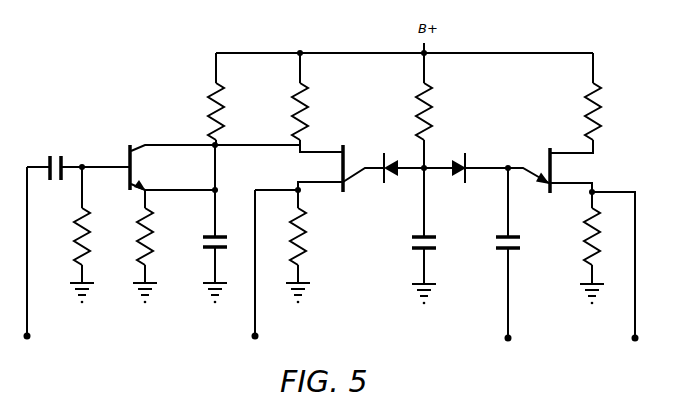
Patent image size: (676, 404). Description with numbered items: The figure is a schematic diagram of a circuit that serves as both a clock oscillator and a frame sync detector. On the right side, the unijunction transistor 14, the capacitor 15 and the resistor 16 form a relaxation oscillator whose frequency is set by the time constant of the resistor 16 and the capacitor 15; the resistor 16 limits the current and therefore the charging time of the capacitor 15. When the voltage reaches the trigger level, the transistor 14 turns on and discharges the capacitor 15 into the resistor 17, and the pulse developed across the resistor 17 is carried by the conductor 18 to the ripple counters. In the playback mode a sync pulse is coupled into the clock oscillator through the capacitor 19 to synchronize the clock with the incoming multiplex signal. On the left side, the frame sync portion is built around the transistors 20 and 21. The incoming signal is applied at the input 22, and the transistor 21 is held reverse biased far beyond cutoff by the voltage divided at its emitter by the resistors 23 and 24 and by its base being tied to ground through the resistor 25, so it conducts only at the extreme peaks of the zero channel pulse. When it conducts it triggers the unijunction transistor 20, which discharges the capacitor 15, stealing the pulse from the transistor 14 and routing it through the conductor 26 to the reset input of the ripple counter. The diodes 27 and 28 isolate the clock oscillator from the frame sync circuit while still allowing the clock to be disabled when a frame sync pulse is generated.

The unijunction transistor 14 is at (565, 169).
The capacitor 15 is at (426, 237).
The resistor 16 is at (432, 92).
The resistor 17 is at (598, 236).
The conductor 18 is at (636, 260).
The capacitor 19 is at (511, 237).
The unijunction transistor 20 is at (344, 160).
The transistor 21 is at (135, 145).
The input 22 is at (28, 236).
The resistor 23 is at (152, 232).
The resistor 24 is at (222, 87).
The resistor 25 is at (90, 235).
The conductor 26 is at (256, 320).
The diode 27 is at (464, 155).
The diode 28 is at (389, 155).